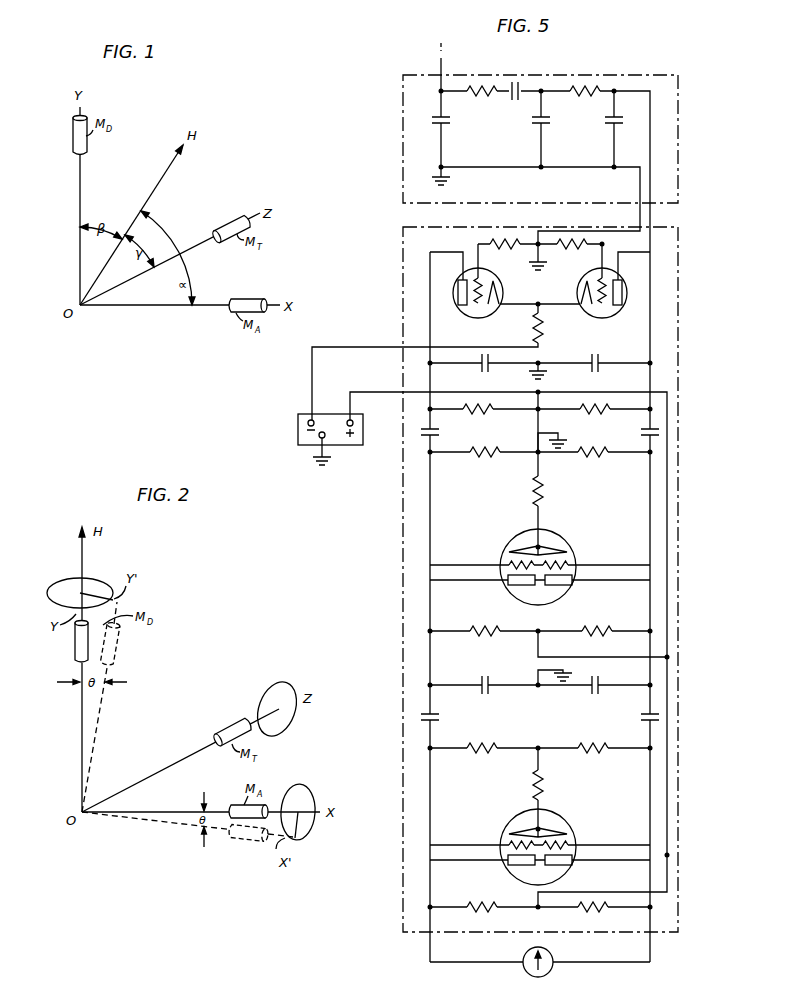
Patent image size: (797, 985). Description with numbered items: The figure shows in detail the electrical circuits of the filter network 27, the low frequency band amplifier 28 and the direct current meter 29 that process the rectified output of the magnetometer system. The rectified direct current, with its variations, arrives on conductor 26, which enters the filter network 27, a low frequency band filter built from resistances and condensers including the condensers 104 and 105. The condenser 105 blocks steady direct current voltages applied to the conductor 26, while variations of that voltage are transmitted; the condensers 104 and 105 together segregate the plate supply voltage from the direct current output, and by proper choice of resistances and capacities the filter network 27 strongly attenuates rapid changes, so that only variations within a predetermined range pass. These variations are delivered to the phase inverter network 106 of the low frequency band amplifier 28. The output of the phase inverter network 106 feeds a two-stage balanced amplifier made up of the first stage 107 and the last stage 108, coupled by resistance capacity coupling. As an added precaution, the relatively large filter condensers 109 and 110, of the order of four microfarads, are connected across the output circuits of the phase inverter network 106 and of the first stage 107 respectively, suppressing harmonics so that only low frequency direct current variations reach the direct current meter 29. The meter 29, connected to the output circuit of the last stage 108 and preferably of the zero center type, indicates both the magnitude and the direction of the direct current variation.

The conductor 26 is at (443, 60).
The filter network 27 is at (681, 92).
The low frequency band amplifier 28 is at (681, 251).
The direct current meter 29 is at (509, 947).
The condenser 104 is at (447, 122).
The condenser 105 is at (515, 101).
The phase inverter network 106 is at (540, 281).
The first stage of two-stage balanced amplifier 107 is at (524, 566).
The last stage of two-stage balanced amplifier 108 is at (529, 846).
The filter condenser 109 is at (484, 356).
The filter condenser 110 is at (483, 691).